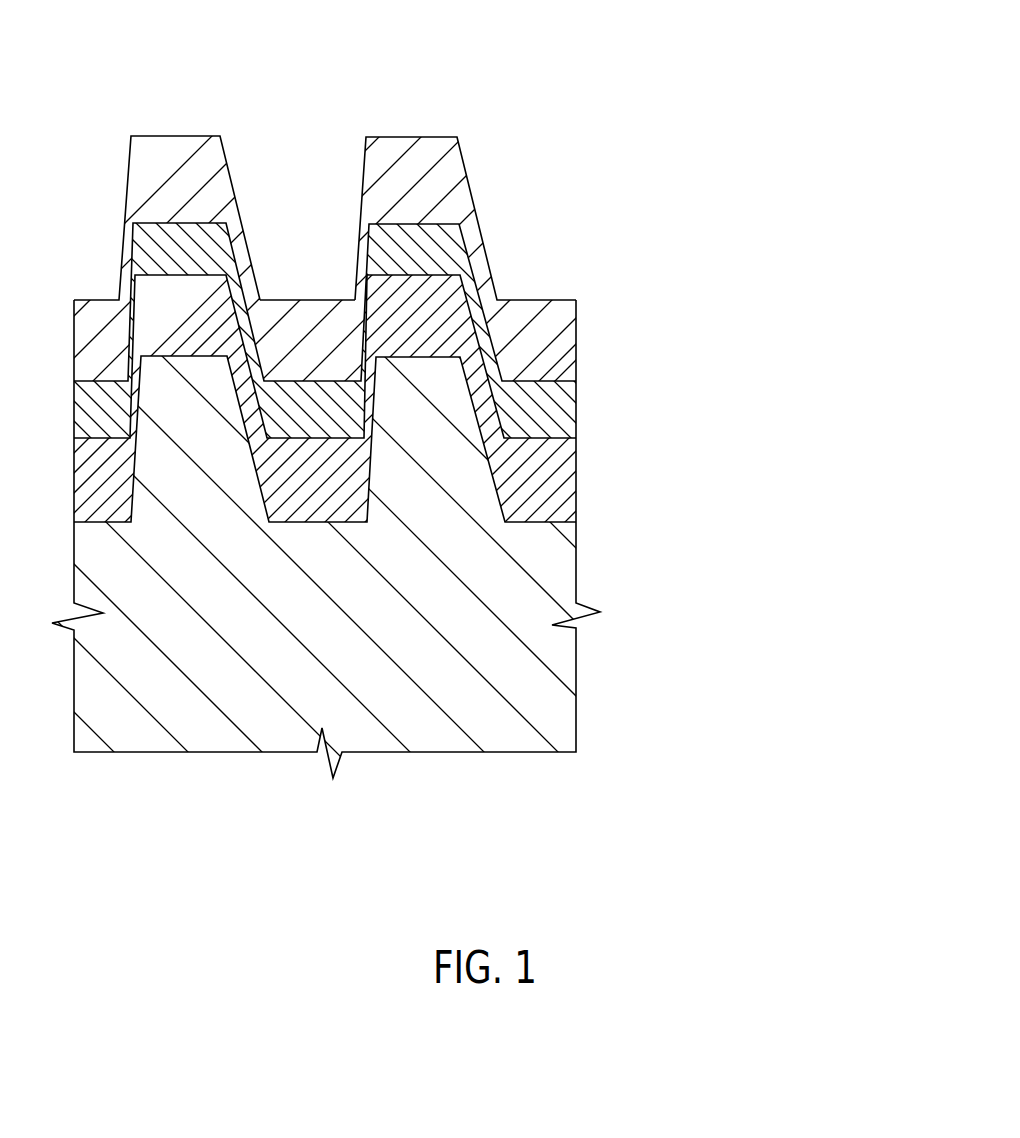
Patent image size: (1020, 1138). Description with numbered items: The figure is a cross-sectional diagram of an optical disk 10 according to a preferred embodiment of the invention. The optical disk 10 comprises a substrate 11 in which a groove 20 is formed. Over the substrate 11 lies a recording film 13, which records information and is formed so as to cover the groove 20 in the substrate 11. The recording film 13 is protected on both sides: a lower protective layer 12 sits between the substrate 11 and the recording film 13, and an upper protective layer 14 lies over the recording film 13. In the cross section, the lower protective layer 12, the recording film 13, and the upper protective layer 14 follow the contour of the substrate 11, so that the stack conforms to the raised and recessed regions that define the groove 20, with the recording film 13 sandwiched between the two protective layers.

The optical disk 10 is at (466, 785).
The substrate 11 is at (568, 566).
The lower protective layer 12 is at (575, 493).
The recording film 13 is at (575, 428).
The upper protective layer 14 is at (575, 349).
The groove 20 is at (292, 128).